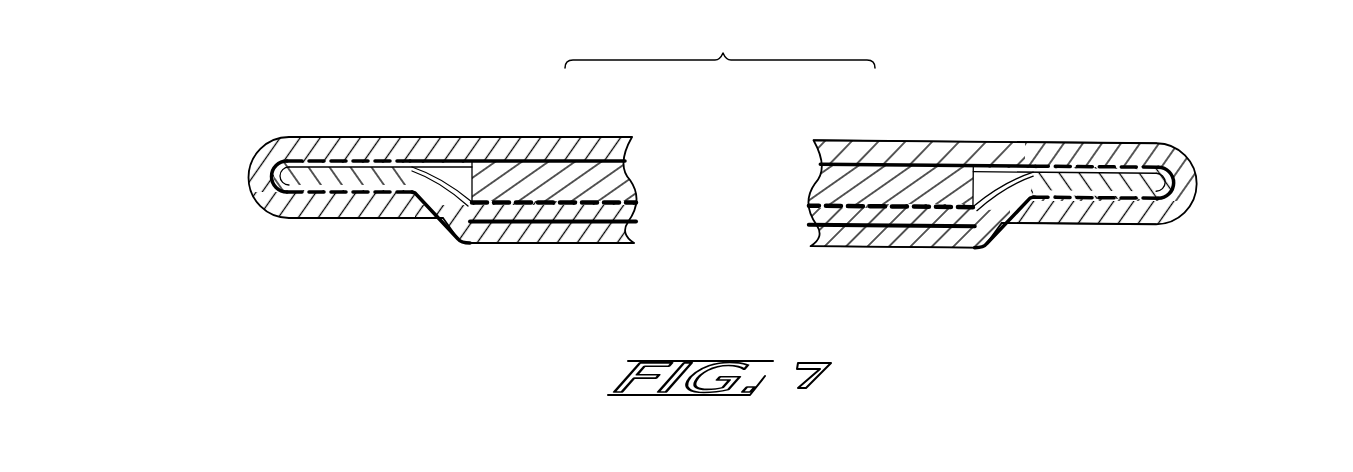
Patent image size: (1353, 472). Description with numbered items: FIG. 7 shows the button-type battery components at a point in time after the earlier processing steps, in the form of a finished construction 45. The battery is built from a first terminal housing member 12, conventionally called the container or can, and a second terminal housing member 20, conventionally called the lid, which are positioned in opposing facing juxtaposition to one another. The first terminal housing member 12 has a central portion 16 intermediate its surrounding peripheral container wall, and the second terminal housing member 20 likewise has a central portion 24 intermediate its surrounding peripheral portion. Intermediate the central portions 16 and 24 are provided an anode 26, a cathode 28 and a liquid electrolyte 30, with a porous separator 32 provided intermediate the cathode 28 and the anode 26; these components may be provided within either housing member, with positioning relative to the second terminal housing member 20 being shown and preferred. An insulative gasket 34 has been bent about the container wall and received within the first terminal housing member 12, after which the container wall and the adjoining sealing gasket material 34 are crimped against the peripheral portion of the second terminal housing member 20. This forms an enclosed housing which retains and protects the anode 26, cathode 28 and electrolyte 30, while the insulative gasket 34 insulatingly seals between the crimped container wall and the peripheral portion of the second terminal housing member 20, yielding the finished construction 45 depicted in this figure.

The first terminal housing member 12 is at (278, 78).
The central portion 16 is at (500, 138).
The second terminal housing member 20 is at (451, 279).
The central portion 24 is at (545, 245).
The anode 26 is at (807, 213).
The cathode 28 is at (827, 168).
The liquid electrolyte 30 is at (447, 243).
The porous separator 32 is at (813, 205).
The insulative gasket 34 is at (314, 214).
The finished construction 45 is at (1253, 113).